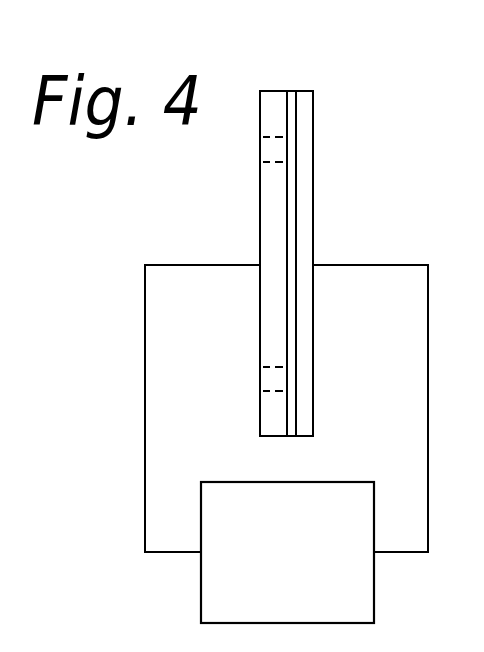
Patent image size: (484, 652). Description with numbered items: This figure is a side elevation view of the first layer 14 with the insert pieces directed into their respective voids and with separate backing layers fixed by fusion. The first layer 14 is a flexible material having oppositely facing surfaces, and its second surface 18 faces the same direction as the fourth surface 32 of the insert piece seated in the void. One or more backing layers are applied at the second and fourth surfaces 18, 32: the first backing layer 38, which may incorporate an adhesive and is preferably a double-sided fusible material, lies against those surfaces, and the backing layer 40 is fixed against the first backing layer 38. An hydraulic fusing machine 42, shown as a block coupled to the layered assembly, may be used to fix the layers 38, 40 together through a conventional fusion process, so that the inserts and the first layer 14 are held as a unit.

The first layer 14 is at (275, 91).
The first backing layer 38 is at (292, 91).
The second surface 18 is at (287, 124).
The backing layer 40 is at (313, 150).
The fourth surface 32 is at (288, 382).
The hydraulic fusing machine 42 is at (303, 610).